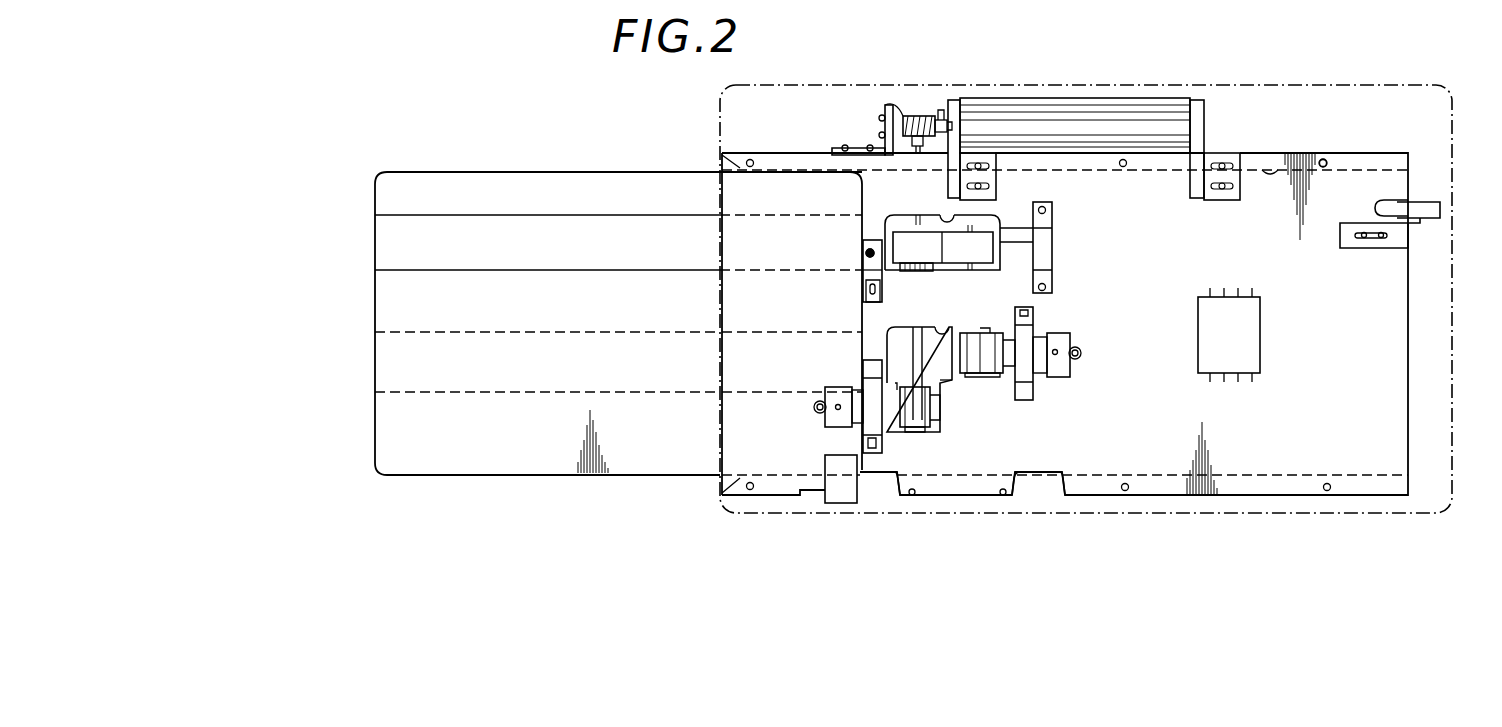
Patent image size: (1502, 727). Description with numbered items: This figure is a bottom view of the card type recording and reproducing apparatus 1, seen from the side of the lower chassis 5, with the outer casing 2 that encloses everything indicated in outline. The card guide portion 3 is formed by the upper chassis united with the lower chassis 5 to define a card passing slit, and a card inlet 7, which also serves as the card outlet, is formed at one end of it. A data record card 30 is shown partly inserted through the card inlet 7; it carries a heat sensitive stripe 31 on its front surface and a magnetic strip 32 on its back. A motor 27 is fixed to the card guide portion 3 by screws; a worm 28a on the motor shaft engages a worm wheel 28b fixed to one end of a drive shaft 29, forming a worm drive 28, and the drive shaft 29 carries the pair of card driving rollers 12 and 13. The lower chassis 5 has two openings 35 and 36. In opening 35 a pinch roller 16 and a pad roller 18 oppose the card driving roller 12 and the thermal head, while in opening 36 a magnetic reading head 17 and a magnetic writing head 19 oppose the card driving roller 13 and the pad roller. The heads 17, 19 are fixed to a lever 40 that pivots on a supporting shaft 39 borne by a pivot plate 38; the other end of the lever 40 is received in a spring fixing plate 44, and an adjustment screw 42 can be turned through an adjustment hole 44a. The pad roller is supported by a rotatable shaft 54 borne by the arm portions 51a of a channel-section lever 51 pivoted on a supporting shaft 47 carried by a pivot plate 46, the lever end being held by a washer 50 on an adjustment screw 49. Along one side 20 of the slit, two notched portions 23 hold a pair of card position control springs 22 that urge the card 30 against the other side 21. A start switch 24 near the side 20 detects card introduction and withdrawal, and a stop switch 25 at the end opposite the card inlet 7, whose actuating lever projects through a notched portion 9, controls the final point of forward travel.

The card type recording and reproducing apparatus 1 is at (1140, 62).
The outer casing 2 is at (1310, 84).
The card guide portion 3 is at (1323, 155).
The lower chassis 5 is at (1390, 325).
The card inlet 7 is at (720, 437).
The notched portion 9 is at (1398, 200).
The card driving roller 12 is at (945, 383).
The card driving roller 13 is at (908, 272).
The pinch roller 16 is at (935, 403).
The magnetic reading head 17 is at (907, 242).
The pad roller 18 is at (978, 376).
The magnetic writing head 19 is at (978, 243).
The one side of the slit 20 is at (1283, 472).
The other side of the slit 21 is at (1278, 152).
The card position control springs 22 is at (882, 478).
The notched portions 23 is at (1028, 480).
The start switch 24 is at (838, 490).
The stop switch 25 is at (1432, 205).
The motor 27 is at (1155, 108).
The worm drive 28 is at (917, 114).
The worm 28a is at (903, 118).
The worm wheel 28b is at (938, 118).
The drive shaft 29 is at (914, 352).
The data record card 30 is at (483, 152).
The heat sensitive stripe 31 is at (475, 373).
The magnetic strip 32 is at (562, 222).
The opening 35 is at (942, 326).
The opening 36 is at (945, 217).
The pivot plate 38 is at (1042, 237).
The supporting shaft 39 is at (1045, 209).
The lever 40 is at (1022, 258).
The adjustment screw 42 is at (864, 257).
The spring fixing plate 44 is at (866, 281).
The adjustment hole 44a is at (866, 251).
The pivot plate 46 is at (873, 401).
The supporting shaft 47 is at (866, 370).
The adjustment screw 49 is at (813, 407).
The washer 50 is at (816, 412).
The lever 51 is at (1030, 332).
The arm portions 51a is at (983, 360).
The rotatable shaft 54 is at (917, 433).